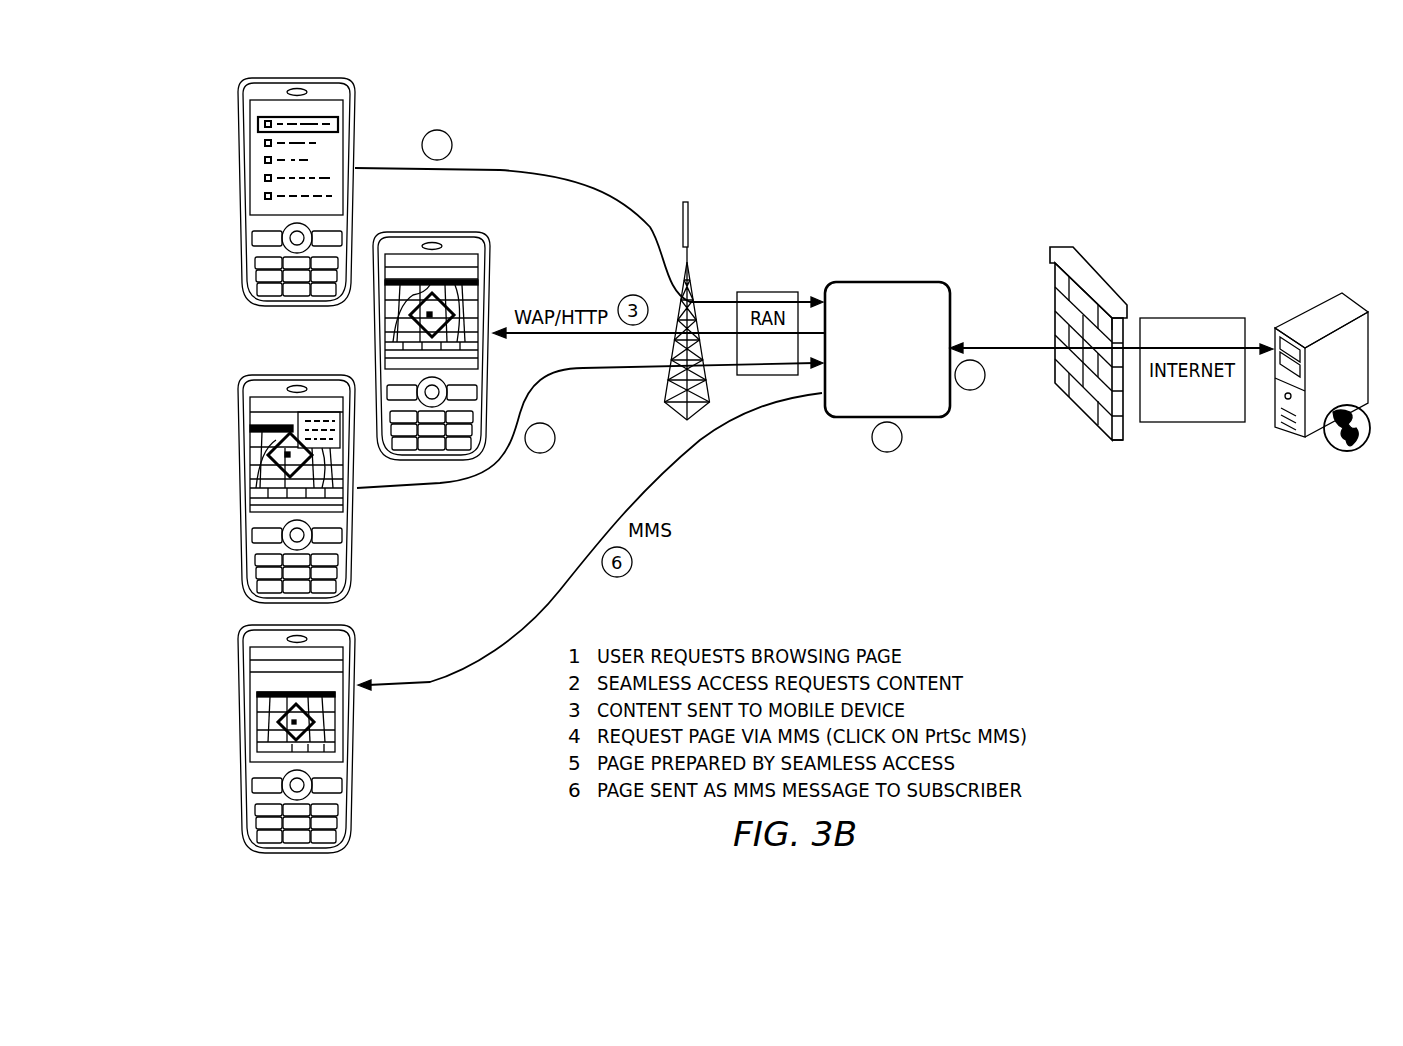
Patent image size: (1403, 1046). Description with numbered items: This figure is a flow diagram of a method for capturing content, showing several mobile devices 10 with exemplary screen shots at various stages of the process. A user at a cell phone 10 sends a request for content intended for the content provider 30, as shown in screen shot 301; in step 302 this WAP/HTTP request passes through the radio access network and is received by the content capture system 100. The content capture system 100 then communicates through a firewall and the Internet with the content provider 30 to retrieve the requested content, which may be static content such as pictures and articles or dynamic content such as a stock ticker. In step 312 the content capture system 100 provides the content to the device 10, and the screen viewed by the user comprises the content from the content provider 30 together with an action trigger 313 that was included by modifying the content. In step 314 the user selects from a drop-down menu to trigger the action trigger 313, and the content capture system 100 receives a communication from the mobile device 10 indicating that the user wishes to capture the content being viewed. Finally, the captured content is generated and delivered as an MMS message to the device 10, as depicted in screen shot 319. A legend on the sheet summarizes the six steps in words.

The mobile device 10 is at (234, 132).
The browsing page 301 is at (275, 100).
The WAP/HTTP request link 302 is at (592, 182).
The content page sent to mobile device 313 is at (410, 260).
The WAP/HTTP MMS request link 314 is at (444, 486).
The MMS page sent to subscriber 319 is at (262, 683).
The radio access network tower 312 is at (722, 333).
The content capture system 100 is at (873, 282).
The content provider 30 is at (1357, 300).